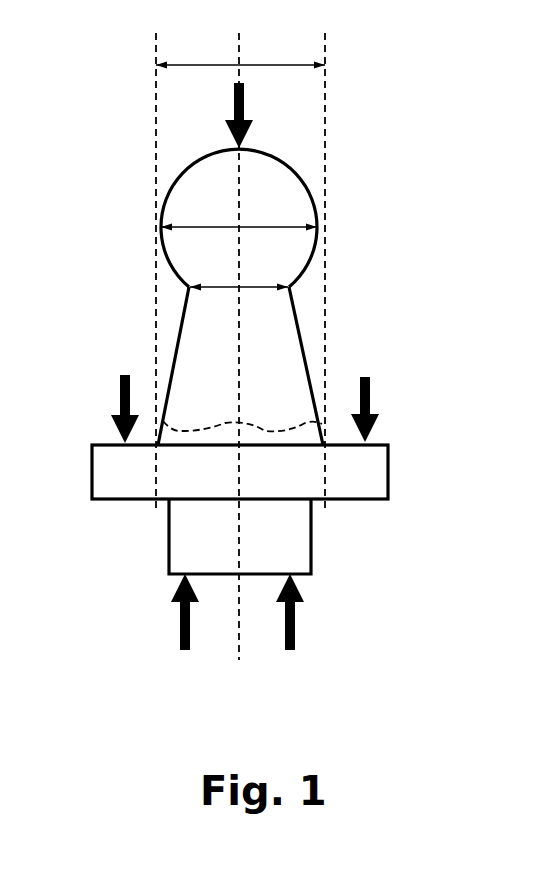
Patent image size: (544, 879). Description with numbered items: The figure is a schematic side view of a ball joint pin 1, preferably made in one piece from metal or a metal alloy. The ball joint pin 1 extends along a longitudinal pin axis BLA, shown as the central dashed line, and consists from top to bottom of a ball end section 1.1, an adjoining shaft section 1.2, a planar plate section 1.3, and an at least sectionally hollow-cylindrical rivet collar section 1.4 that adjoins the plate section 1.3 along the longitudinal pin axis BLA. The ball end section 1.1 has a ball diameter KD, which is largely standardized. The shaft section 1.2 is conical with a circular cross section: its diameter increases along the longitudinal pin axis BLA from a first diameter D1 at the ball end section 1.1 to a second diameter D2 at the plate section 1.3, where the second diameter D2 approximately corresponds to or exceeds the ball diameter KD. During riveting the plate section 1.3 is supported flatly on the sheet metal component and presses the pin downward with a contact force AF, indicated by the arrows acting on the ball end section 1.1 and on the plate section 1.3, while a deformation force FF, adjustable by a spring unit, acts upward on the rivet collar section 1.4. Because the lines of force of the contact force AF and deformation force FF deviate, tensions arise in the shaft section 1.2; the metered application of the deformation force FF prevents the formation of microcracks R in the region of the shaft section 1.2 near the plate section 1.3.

The ball joint pin 1 is at (289, 326).
The ball end section 1.1 is at (283, 245).
The shaft section 1.2 is at (287, 333).
The plate section 1.3 is at (372, 477).
The rivet collar section 1.4 is at (317, 536).
The microcracks R is at (206, 403).
The first diameter D1 is at (239, 270).
The second diameter D2 is at (240, 267).
The ball diameter KD is at (239, 210).
The longitudinal pin axis BLA is at (250, 368).
The contact force AF is at (248, 263).
The deformation force FF is at (236, 631).